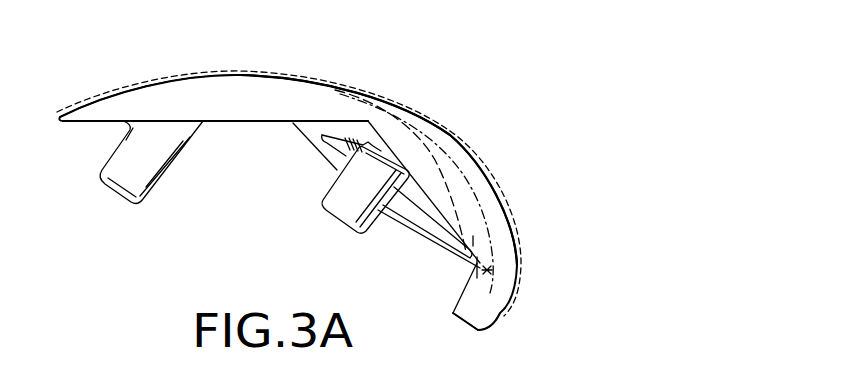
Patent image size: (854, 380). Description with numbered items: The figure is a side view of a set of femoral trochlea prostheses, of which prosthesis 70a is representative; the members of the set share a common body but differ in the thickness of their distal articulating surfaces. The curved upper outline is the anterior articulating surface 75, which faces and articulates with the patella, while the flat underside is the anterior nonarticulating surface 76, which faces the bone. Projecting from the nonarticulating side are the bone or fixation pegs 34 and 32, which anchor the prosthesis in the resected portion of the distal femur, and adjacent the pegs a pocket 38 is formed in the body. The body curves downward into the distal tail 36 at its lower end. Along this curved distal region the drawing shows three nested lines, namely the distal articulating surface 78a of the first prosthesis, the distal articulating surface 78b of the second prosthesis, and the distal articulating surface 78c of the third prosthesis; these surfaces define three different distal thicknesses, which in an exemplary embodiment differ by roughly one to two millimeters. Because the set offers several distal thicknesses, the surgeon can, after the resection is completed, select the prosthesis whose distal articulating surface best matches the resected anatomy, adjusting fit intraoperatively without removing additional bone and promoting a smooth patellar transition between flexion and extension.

The femoral trochlea prosthesis 70a is at (496, 121).
The anterior articulating surface 75 is at (272, 78).
The anterior nonarticulating surface 76 is at (245, 123).
The distal articulating surface 78a is at (474, 240).
The distal articulating surface 78b is at (493, 228).
The distal articulating surface 78c is at (502, 203).
The fixation peg 34 is at (120, 183).
The fixation peg 32 is at (343, 204).
The pocket 38 is at (419, 205).
The distal tail 36 is at (473, 310).